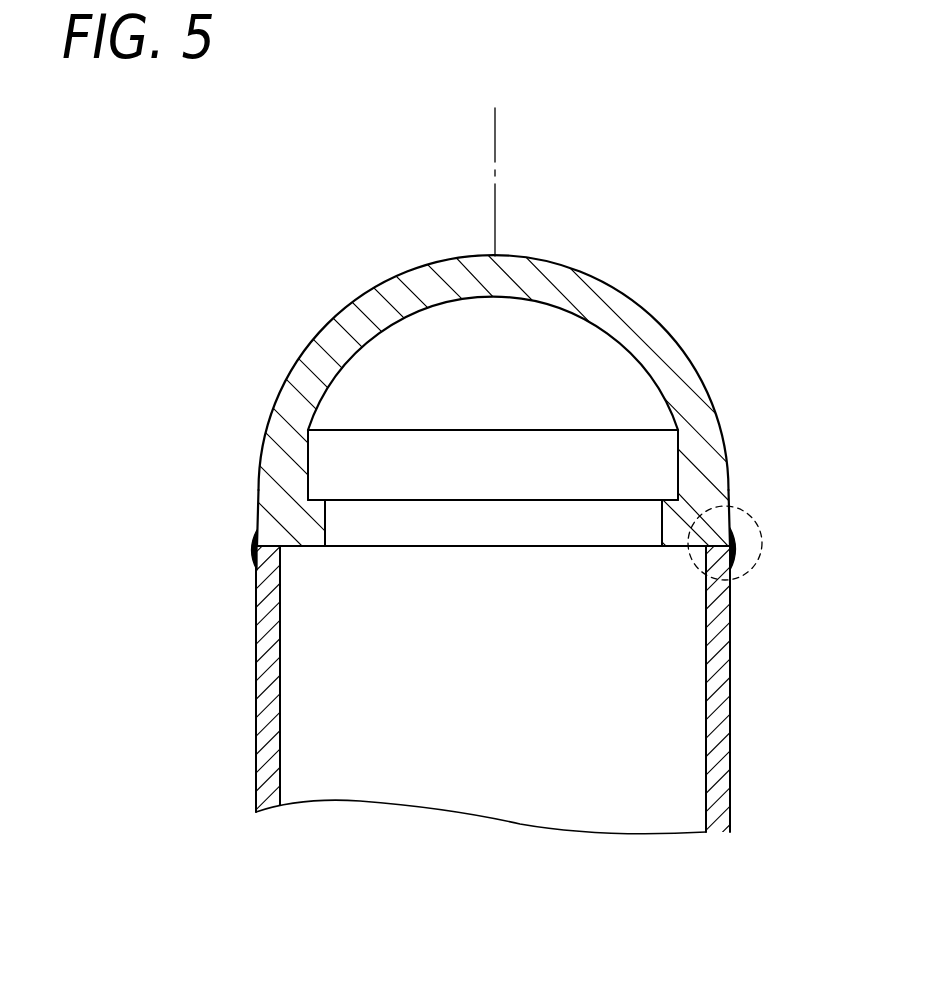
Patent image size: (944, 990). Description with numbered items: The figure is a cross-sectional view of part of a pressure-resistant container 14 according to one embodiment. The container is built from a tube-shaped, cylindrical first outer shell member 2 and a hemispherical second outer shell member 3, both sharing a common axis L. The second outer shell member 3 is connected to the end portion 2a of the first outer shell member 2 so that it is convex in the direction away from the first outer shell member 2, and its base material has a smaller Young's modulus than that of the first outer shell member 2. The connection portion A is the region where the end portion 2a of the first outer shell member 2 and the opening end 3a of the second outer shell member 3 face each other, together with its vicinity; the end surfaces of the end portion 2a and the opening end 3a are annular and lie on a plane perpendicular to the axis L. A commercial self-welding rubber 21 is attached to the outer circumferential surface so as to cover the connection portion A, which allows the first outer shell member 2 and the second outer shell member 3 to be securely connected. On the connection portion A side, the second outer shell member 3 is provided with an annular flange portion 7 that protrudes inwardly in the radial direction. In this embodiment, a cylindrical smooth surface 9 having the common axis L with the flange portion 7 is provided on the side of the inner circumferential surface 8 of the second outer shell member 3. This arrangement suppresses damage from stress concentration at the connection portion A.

The pressure-resistant container 14 is at (379, 164).
The axis L is at (497, 140).
The second outer shell member 3 is at (687, 398).
The opening end 3a is at (268, 535).
The inner circumferential surface 8 is at (483, 299).
The cylindrical smooth surface 9 is at (678, 473).
The flange portion 7 is at (310, 531).
The first outer shell member 2 is at (716, 608).
The end portion 2a is at (264, 562).
The self-welding rubber 21 is at (250, 550).
The connection portion A is at (760, 535).